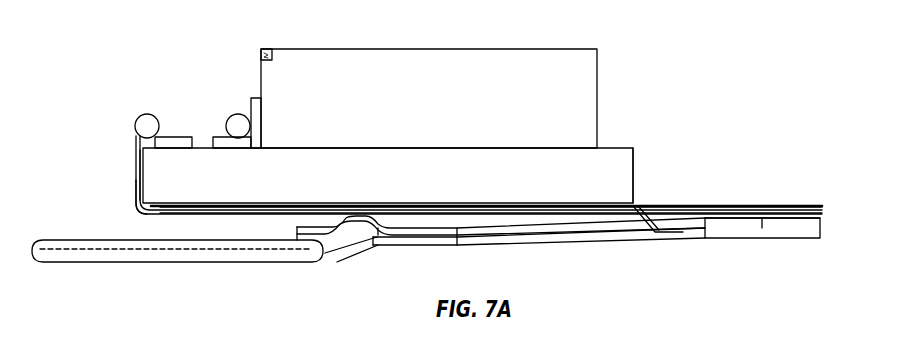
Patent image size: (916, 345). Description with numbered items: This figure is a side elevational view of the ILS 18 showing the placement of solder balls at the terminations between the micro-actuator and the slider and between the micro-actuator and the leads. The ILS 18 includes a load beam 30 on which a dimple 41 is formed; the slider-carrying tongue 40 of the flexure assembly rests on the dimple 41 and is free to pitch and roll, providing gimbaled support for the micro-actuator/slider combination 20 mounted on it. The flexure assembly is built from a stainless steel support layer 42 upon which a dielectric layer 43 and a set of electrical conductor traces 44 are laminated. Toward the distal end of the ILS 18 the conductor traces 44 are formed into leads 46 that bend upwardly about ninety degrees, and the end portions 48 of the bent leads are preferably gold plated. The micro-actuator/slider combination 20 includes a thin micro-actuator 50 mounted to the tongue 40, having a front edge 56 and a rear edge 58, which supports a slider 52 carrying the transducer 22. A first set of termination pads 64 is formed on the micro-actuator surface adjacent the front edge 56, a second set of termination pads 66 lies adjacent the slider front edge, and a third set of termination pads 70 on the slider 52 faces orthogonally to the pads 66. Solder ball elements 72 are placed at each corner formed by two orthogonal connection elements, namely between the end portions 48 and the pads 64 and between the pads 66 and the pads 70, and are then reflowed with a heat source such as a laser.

The ILS 18 is at (724, 77).
The micro-actuator/slider combination 20 is at (150, 58).
The transducer 22 is at (268, 48).
The load beam 30 is at (738, 238).
The slider-carrying tongue 40 is at (636, 207).
The dimple 41 is at (375, 214).
The support layer 42 is at (822, 219).
The dielectric layer 43 is at (822, 213).
The electrical conductor traces 44 is at (822, 207).
The leads 46 is at (133, 182).
The end portions of the bent leads 48 is at (135, 148).
The micro-actuator 50 is at (610, 147).
The slider 52 is at (435, 49).
The front edge 56 is at (142, 173).
The rear edge 58 is at (633, 165).
The first set of termination pads 64 is at (163, 142).
The second set of termination pads 66 is at (222, 142).
The third set of termination pads 70 is at (259, 110).
The solder ball elements 72 is at (146, 114).